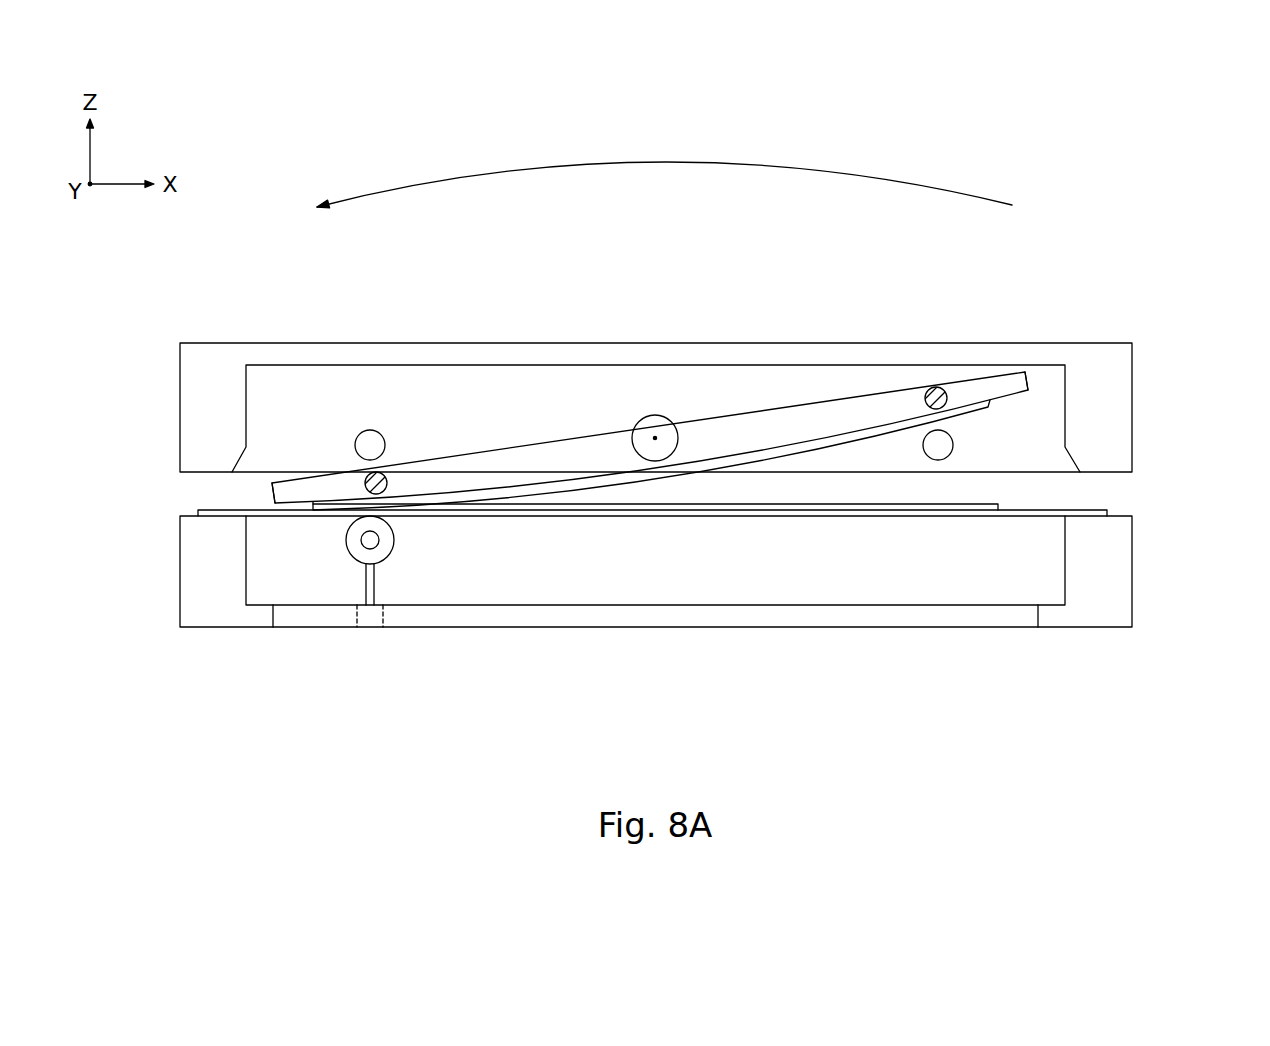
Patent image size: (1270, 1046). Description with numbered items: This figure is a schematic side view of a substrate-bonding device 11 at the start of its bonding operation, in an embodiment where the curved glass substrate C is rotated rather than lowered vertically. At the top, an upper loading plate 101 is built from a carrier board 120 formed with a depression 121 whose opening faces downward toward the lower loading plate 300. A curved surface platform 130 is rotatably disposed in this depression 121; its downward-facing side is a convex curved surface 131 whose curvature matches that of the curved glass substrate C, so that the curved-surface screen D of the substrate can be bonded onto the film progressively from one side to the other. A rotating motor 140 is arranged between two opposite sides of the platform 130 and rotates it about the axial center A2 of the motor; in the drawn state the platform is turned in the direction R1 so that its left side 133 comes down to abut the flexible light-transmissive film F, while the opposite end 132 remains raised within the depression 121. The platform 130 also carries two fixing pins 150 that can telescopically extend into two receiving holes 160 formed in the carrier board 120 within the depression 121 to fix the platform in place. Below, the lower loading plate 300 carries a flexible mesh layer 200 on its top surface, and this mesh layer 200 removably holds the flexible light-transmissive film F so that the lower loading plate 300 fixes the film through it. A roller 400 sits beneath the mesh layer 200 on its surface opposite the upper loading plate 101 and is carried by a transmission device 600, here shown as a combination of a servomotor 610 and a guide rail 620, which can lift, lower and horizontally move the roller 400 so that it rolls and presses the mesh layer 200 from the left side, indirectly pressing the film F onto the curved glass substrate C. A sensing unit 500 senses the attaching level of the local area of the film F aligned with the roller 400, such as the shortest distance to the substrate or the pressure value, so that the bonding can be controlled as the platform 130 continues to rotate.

The substrate-bonding device 11 is at (1157, 100).
The upper loading plate 101 is at (1141, 398).
The carrier board 120 is at (1105, 356).
The depression 121 is at (1043, 378).
The curved surface platform 130 is at (778, 418).
The convex curved surface 131 is at (780, 450).
The end portion of movable part 132 is at (1013, 380).
The left side 133 is at (272, 490).
The rotating motor 140 is at (673, 422).
The fixing pins 150 is at (390, 474).
The receiving holes 160 is at (380, 430).
The flexible mesh layer 200 is at (1107, 511).
The lower loading plate 300 is at (1103, 583).
The roller 400 is at (346, 528).
The sensing unit 500 is at (360, 540).
The transmission device 600 is at (347, 700).
The servomotor 610 is at (373, 621).
The guide rail 620 is at (434, 621).
The direction R1 is at (530, 167).
The axial center A2 is at (655, 437).
The curved glass substrate C is at (555, 487).
The curved-surface screen D is at (670, 476).
The flexible light-transmissive film F is at (992, 503).